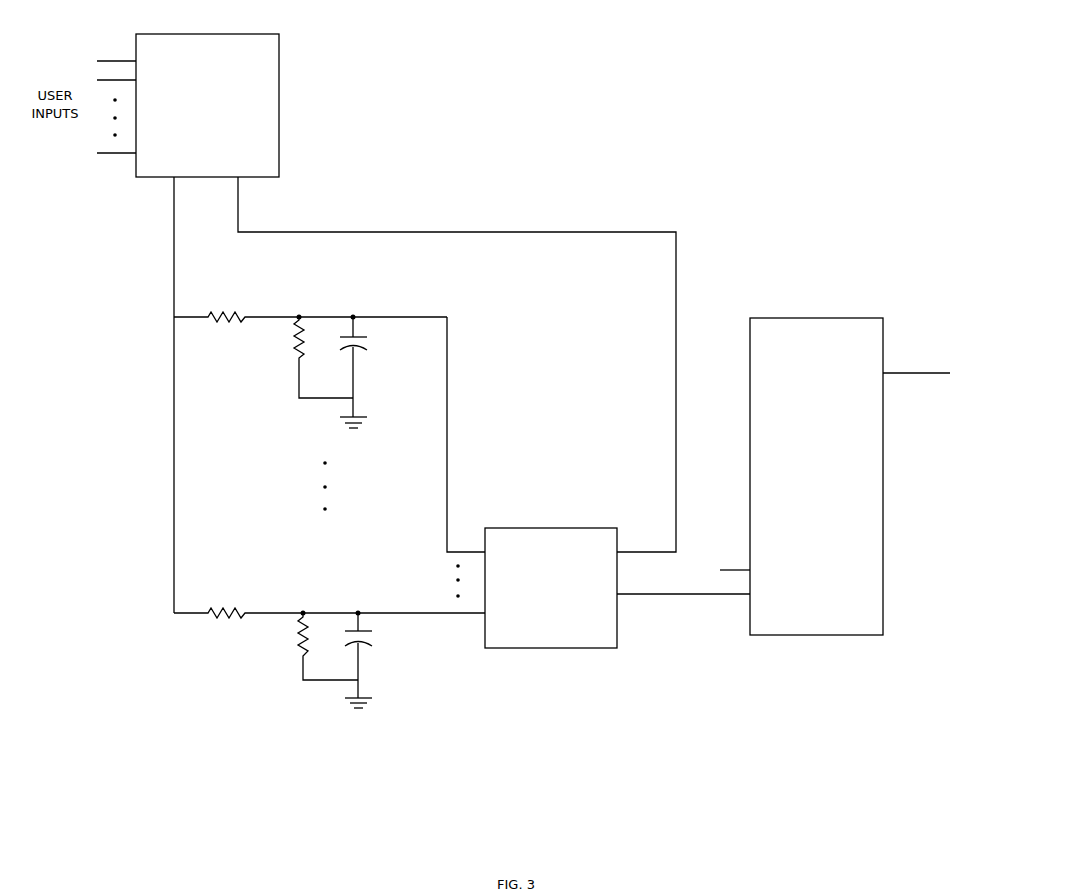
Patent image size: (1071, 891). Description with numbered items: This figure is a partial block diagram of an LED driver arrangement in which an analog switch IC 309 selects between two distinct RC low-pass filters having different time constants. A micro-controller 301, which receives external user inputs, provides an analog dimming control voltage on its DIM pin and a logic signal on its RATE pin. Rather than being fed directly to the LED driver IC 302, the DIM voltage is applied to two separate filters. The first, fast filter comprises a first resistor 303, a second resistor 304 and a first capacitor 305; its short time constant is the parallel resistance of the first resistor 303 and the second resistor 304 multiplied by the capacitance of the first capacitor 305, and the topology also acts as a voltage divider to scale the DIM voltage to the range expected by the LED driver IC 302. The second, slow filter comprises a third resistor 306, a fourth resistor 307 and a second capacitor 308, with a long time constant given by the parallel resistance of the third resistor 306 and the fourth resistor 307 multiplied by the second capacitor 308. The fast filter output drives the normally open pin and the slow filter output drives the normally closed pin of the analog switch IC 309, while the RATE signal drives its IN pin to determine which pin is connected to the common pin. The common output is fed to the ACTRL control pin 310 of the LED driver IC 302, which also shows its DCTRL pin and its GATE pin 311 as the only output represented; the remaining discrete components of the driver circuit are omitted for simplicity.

The micro-controller 301 is at (207, 96).
The LED driver IC 302 is at (816, 467).
The resistor R1 303 is at (310, 303).
The resistor R2 304 is at (309, 357).
The capacitor C1 305 is at (368, 372).
The resistor R3 306 is at (329, 596).
The resistor R4 307 is at (315, 646).
The capacitor C2 308 is at (374, 660).
The analog switch IC 309 is at (536, 582).
The ACTRL control pin 310 is at (683, 605).
The GATE pin 311 is at (916, 384).